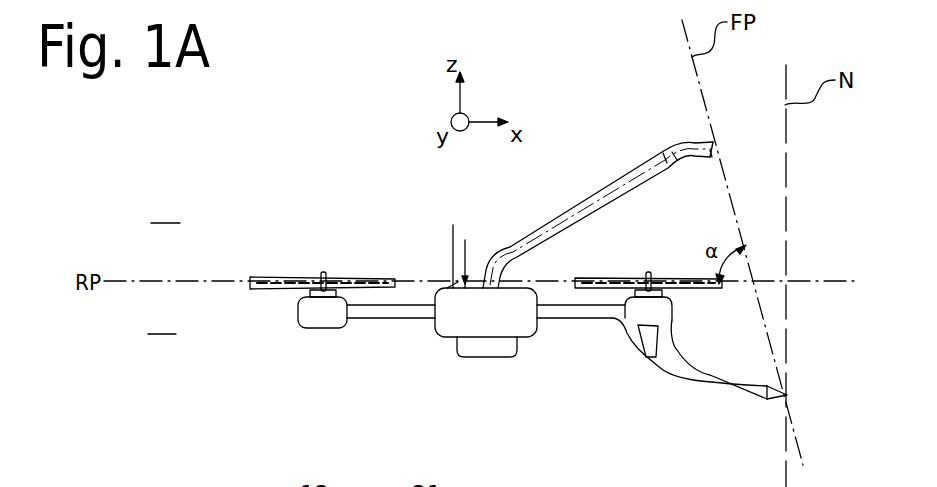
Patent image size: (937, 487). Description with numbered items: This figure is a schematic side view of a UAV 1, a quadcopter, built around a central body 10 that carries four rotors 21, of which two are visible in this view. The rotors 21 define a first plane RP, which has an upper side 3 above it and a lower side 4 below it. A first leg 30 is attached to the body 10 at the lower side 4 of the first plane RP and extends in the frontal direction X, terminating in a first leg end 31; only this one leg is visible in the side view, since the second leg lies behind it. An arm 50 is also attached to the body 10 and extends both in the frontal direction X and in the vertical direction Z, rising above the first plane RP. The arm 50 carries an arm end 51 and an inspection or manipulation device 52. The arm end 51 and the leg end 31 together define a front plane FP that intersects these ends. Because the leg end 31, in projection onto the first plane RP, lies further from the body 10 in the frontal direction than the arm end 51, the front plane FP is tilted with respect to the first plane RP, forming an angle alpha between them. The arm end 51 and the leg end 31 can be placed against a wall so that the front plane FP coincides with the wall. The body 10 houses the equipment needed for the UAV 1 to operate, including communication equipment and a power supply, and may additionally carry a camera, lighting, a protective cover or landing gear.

The UAV 1 is at (378, 205).
The upper side 3 is at (165, 208).
The lower side 4 is at (162, 320).
The body 10 is at (463, 318).
The rotors 21 is at (280, 277).
The first leg 30 is at (693, 383).
The first leg end 31 is at (788, 396).
The arm 50 is at (595, 206).
The arm end 51 is at (714, 147).
The inspection or manipulation device 52 is at (712, 153).